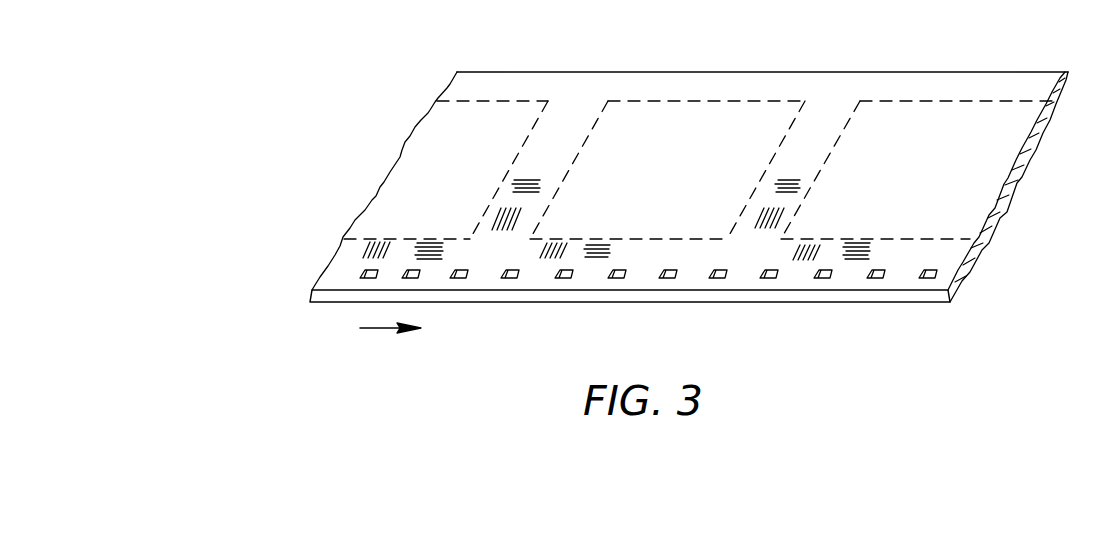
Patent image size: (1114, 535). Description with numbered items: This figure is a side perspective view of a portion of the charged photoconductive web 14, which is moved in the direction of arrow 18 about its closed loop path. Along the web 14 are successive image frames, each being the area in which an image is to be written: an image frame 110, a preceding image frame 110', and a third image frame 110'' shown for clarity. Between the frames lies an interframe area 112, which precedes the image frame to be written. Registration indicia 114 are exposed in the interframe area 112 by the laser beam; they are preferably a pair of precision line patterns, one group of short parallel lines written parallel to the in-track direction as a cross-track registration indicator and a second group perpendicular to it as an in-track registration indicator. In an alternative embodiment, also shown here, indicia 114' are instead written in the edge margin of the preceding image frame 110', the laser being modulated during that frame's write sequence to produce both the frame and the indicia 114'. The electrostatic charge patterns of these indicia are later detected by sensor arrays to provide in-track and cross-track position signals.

The image frame 110 is at (689, 187).
The preceding image frame 110' is at (667, 141).
The third image frame 110'' is at (1027, 181).
The interframe area 112 is at (580, 108).
The indicia 114 is at (631, 181).
The indicia 114' is at (616, 226).
The web 14 is at (898, 284).
The arrow 18 is at (383, 329).